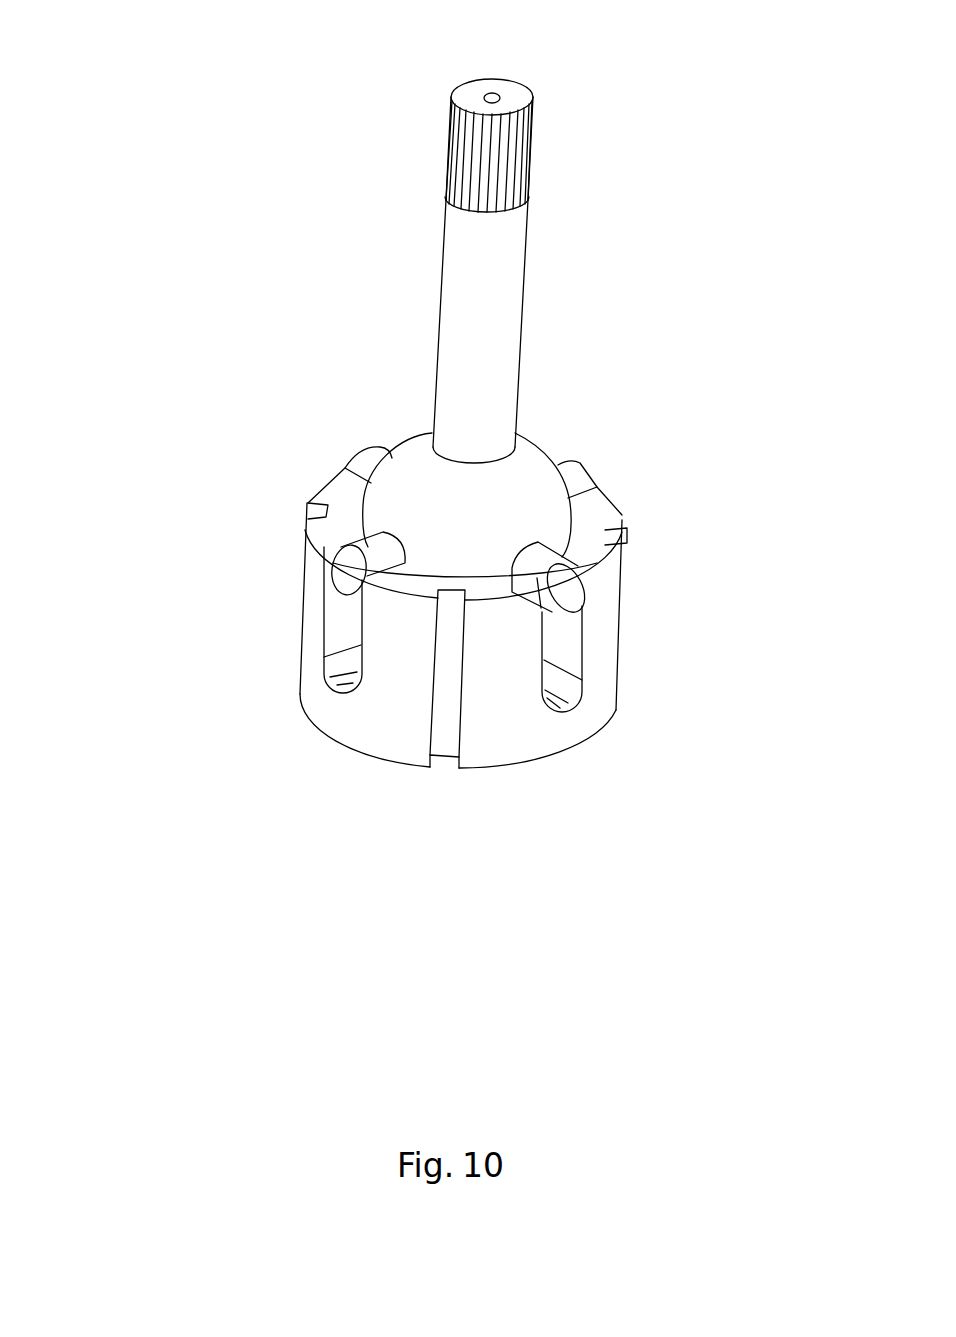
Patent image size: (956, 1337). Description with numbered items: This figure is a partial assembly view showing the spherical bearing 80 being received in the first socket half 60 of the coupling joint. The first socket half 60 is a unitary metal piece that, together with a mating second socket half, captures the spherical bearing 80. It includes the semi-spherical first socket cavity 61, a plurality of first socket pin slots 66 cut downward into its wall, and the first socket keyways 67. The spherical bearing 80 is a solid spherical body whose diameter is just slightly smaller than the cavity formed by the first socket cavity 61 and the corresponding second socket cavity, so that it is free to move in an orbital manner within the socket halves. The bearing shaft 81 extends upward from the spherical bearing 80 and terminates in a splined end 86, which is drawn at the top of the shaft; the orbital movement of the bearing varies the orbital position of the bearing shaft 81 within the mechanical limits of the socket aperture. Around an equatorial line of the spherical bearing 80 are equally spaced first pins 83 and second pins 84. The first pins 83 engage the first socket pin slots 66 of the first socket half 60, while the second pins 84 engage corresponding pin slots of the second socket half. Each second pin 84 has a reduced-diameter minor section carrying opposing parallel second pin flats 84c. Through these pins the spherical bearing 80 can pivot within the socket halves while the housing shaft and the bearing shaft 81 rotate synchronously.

The first socket half 60 is at (584, 747).
The first socket cavity 61 is at (473, 573).
The first socket pin slots 66 is at (333, 642).
The first socket keyways 67 is at (463, 680).
The spherical bearing 80 is at (517, 516).
The bearing shaft 81 is at (474, 300).
The first pins 83 is at (355, 573).
The second pins 84 is at (568, 592).
The second pin flats 84c is at (537, 578).
The splined end 86 is at (470, 182).